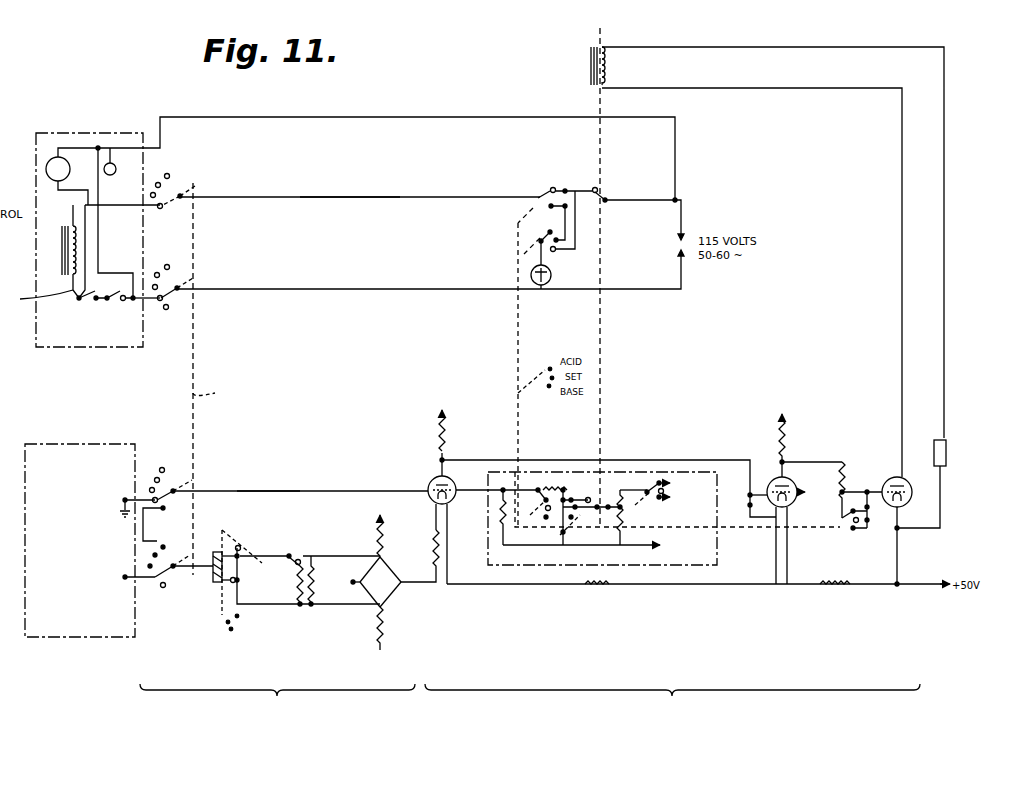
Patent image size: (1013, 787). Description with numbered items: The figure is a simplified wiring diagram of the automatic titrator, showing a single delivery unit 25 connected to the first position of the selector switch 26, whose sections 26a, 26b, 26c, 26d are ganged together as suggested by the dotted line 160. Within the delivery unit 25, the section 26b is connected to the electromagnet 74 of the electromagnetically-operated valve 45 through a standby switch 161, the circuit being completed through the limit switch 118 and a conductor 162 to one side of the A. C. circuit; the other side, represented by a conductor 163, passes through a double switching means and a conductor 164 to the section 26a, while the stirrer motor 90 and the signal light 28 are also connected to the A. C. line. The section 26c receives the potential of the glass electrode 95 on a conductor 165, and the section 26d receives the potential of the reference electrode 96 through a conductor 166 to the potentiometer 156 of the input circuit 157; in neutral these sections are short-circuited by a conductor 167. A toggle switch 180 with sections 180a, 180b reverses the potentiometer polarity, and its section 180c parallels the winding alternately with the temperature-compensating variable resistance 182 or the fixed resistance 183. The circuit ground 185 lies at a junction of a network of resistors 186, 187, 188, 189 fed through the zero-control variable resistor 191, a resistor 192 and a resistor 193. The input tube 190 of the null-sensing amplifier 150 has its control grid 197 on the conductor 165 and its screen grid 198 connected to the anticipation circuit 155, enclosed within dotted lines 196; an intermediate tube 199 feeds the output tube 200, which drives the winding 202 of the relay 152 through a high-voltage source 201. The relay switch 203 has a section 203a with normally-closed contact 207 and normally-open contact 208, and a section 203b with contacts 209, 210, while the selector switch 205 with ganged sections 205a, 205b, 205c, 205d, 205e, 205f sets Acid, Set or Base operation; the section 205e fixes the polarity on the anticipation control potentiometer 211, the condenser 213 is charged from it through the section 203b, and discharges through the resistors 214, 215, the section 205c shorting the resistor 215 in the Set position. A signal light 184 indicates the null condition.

The delivery unit 25 is at (78, 133).
The stirrer motor 90 is at (46, 169).
The signal light 28 is at (114, 175).
The electromagnetically-operated valve 45 is at (56, 245).
The electromagnet 74 is at (36, 299).
The standby switch 161 is at (84, 303).
The limit switch 118 is at (117, 303).
The selector switch 26 is at (183, 172).
The switch section 26a is at (182, 200).
The switch section 26b is at (180, 295).
The switch section 26c is at (170, 480).
The switch section 26d is at (168, 590).
The dotted line 160 is at (218, 383).
The conductor 164 is at (340, 197).
The relay 152 is at (587, 73).
The relay winding 202 is at (606, 72).
The high-voltage source of D. C. 201 is at (946, 453).
The selector switch 205 is at (536, 185).
The switch section 205a is at (540, 190).
The switch section 205b is at (538, 241).
The switch section 205c is at (538, 488).
The switch section 205d is at (575, 500).
The switch section 205e is at (655, 485).
The switch section 205f is at (848, 524).
The normally-open contact 208 is at (593, 187).
The relay switch 203 is at (610, 185).
The switch section 203a is at (608, 202).
The switch section 203b is at (620, 545).
The normally-closed contact 207 is at (600, 208).
The conductor 163 is at (632, 200).
The conductor 162 is at (648, 290).
The signal light 184 is at (549, 280).
The glass electrode 95 is at (124, 496).
The reference electrode 96 is at (125, 580).
The conductor 167 is at (157, 541).
The conductor 166 is at (192, 570).
The potentiometer 156 is at (213, 552).
The toggle switch 180 is at (240, 532).
The switch section 180a is at (242, 548).
The switch section 180b is at (238, 582).
The switch section 180c is at (302, 560).
The temperature-compensating variable resistance 182 is at (300, 604).
The fixed resistance 183 is at (312, 604).
The conductor 165 is at (290, 491).
The input tube 190 is at (432, 480).
The screen grid 198 is at (458, 466).
The control grid 197 is at (455, 500).
The zero-control variable resistor 191 is at (434, 536).
The resistor 192 is at (377, 538).
The resistor 193 is at (384, 630).
The circuit ground 185 is at (351, 582).
The resistor 186 is at (372, 566).
The resistor 187 is at (392, 572).
The resistor 188 is at (392, 594).
The resistor 189 is at (368, 594).
The anticipation circuit 155 is at (666, 568).
The resistor 214 is at (503, 530).
The condenser 213 is at (560, 545).
The resistor 215 is at (548, 488).
The normally-closed contact 209 is at (563, 538).
The normally-open contact 210 is at (591, 497).
The anticipation control potentiometer 211 is at (644, 500).
The dotted lines 196 is at (717, 535).
The intermediate tube 199 is at (770, 480).
The output tube 200 is at (886, 480).
The input circuit 157 is at (277, 707).
The null-sensing amplifier 150 is at (672, 708).